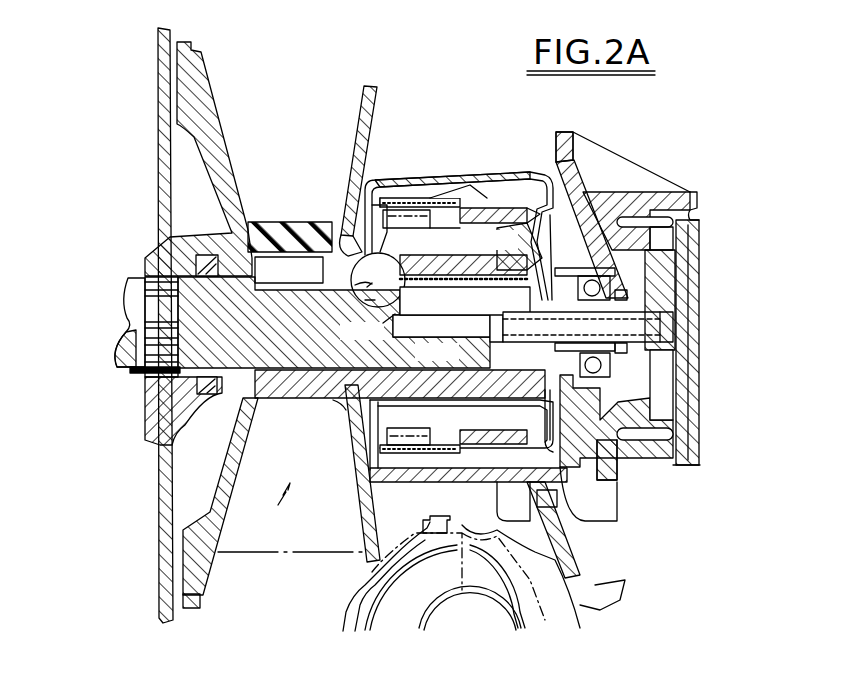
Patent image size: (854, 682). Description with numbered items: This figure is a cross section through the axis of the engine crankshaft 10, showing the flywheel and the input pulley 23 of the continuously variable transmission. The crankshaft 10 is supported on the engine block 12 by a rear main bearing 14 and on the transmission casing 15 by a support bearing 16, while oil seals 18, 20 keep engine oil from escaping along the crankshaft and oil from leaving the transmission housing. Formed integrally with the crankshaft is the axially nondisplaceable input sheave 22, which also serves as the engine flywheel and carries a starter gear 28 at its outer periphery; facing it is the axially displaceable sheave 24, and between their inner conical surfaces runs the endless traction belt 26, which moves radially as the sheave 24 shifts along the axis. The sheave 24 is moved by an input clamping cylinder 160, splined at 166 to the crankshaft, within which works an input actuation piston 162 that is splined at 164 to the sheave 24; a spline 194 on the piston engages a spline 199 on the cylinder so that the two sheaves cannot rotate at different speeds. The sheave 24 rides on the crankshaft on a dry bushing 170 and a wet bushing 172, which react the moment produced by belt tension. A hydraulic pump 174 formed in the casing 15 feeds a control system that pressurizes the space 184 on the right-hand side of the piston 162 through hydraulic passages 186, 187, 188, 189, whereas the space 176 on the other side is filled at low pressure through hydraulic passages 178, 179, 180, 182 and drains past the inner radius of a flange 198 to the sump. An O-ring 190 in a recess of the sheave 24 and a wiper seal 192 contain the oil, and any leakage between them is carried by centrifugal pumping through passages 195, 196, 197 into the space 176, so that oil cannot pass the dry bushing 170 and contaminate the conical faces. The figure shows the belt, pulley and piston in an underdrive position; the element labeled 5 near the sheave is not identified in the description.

The mounting plate 5 is at (338, 232).
The engine crankshaft 10 is at (133, 305).
The engine block 12 is at (150, 413).
The rear main bearing 14 is at (158, 232).
The transmission casing 15 is at (678, 195).
The support bearing 16 is at (627, 367).
The oil seal 18 is at (225, 395).
The oil seal 20 is at (333, 405).
The axially nondisplaceable input sheave 22 is at (233, 467).
The input pulley 23 is at (271, 509).
The axially displaceable sheave 24 is at (343, 460).
The endless traction belt 26 is at (259, 222).
The starter gear 28 is at (194, 604).
The input clamping cylinder 160 is at (482, 174).
The input actuation piston 162 is at (530, 210).
The spline 164 is at (505, 270).
The spline 166 is at (596, 278).
The dry bushing 170 is at (323, 278).
The wet bushing 172 is at (461, 435).
The hydraulic pump 174 is at (680, 247).
The space 176 is at (428, 205).
The hydraulic passage 178 is at (461, 314).
The hydraulic passage 179 is at (383, 323).
The hydraulic passage 180 is at (462, 332).
The hydraulic passage 182 is at (603, 328).
The space 184 is at (520, 205).
The hydraulic passage 186 is at (510, 298).
The hydraulic passage 187 is at (610, 340).
The hydraulic passage 188 is at (660, 297).
The hydraulic passage 189 is at (587, 210).
The O-ring 190 is at (365, 300).
The wiper seal 192 is at (355, 285).
The spline 194 is at (440, 200).
The passage 195 is at (415, 270).
The passage 196 is at (448, 270).
The passage 197 is at (367, 287).
The flange 198 is at (384, 470).
The spline 199 is at (392, 198).